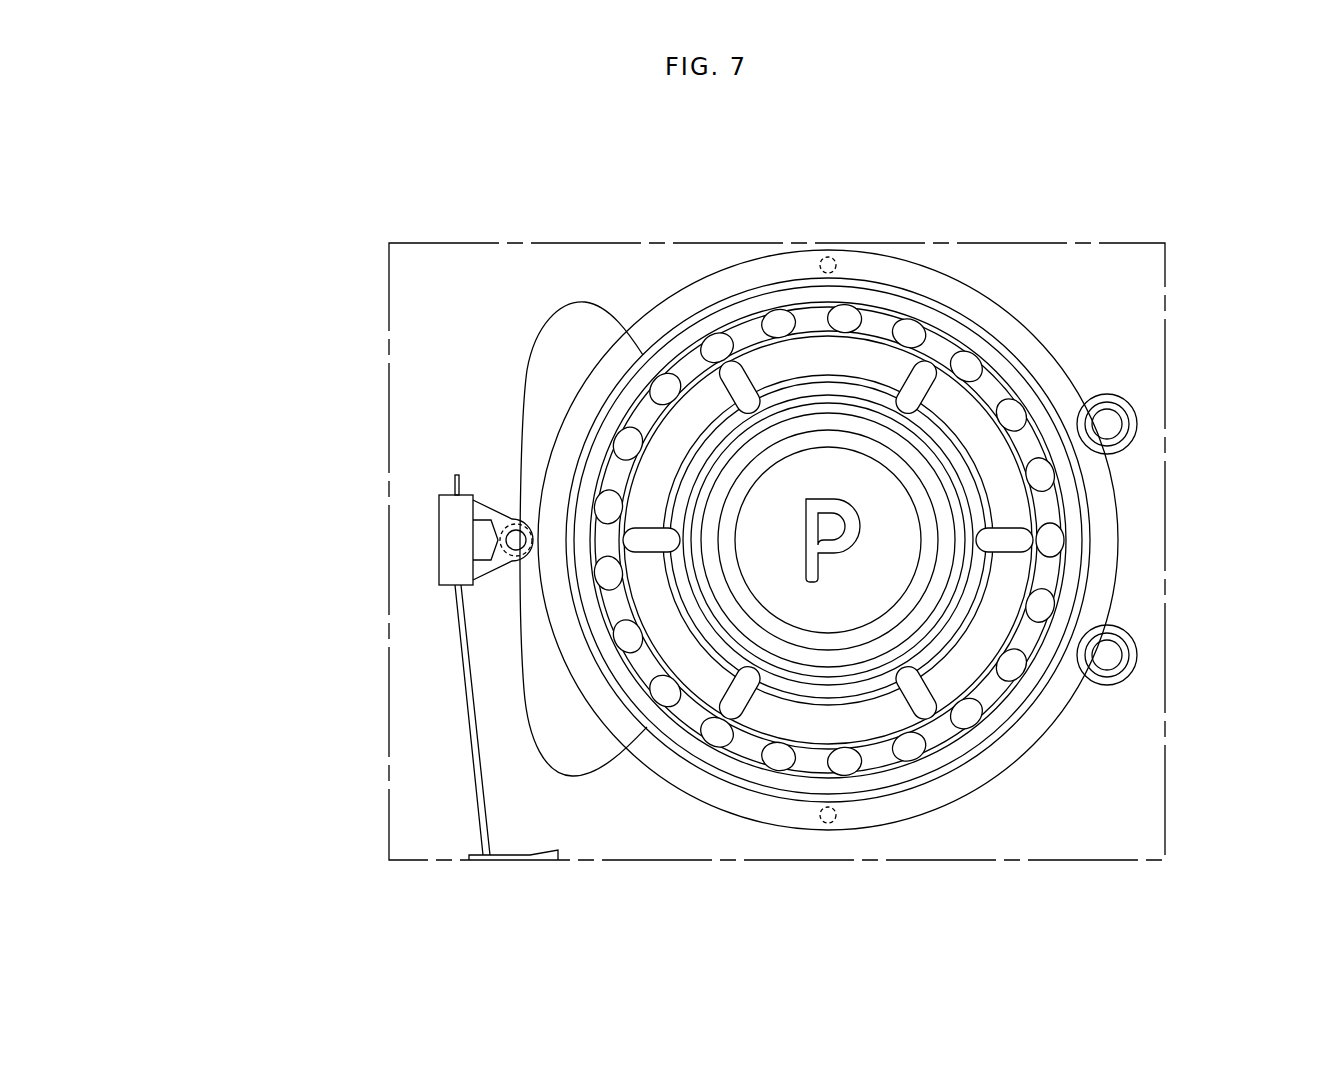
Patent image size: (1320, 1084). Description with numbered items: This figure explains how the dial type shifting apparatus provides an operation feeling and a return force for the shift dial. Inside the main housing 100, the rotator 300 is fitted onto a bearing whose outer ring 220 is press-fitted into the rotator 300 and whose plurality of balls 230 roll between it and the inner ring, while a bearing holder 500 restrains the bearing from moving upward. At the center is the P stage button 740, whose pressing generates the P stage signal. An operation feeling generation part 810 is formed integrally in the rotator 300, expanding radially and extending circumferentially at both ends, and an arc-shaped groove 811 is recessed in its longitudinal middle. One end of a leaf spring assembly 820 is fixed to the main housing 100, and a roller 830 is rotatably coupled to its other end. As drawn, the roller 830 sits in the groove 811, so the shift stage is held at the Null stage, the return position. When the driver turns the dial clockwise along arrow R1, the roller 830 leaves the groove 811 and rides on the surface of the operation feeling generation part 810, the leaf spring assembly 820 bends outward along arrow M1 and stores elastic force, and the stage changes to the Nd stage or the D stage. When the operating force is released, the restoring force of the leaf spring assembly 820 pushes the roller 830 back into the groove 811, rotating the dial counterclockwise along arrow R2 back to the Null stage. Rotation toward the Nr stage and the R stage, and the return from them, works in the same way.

The main housing 100 is at (1142, 597).
The rotator 300 is at (1097, 495).
The outer ring 220 is at (1005, 698).
The balls 230 is at (965, 712).
The bearing holder 500 is at (783, 363).
The P stage button 740 is at (878, 512).
The operation feeling generation part 810 is at (578, 372).
The roller 830 is at (470, 509).
The groove 811 is at (473, 560).
The leaf spring assembly 820 is at (470, 745).
The R stage R is at (806, 540).
The Nr stage Nr is at (806, 540).
The Null stage Null is at (806, 540).
The Nd stage Nd is at (806, 540).
The D stage D is at (806, 540).
The arrow M1 is at (425, 560).
The arrow R1 is at (1096, 344).
The arrow R2 is at (1078, 347).